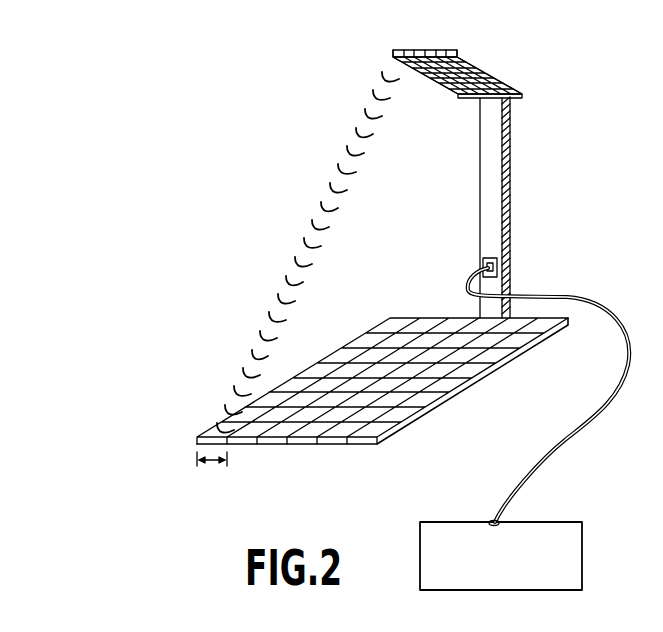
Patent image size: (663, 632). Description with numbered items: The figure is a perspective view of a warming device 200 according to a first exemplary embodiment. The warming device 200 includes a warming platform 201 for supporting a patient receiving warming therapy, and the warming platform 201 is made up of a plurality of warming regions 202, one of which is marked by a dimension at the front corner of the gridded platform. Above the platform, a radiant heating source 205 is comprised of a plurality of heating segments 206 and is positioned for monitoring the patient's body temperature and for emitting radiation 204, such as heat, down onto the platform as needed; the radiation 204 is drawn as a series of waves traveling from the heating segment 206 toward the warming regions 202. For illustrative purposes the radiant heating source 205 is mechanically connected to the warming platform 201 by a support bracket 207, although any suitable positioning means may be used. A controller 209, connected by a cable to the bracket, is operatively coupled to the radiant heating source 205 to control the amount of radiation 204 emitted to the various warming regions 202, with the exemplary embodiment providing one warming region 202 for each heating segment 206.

The warming device 200 is at (107, 189).
The warming platform 201 is at (304, 363).
The warming region 202 is at (198, 436).
The radiation 204 is at (283, 288).
The radiant heating source 205 is at (388, 50).
The heating segment 206 is at (400, 63).
The support bracket 207 is at (512, 165).
The controller 209 is at (558, 522).